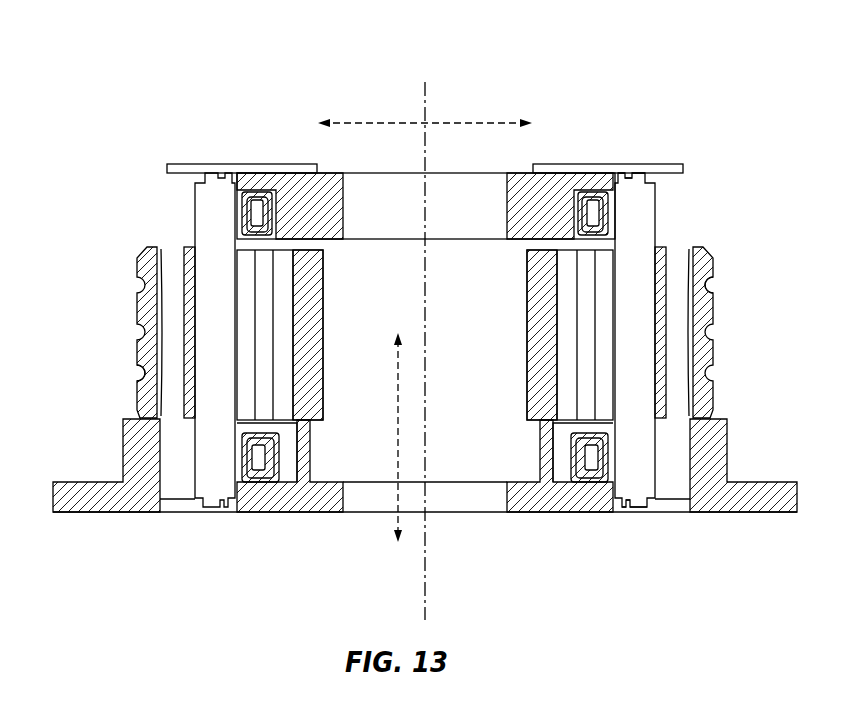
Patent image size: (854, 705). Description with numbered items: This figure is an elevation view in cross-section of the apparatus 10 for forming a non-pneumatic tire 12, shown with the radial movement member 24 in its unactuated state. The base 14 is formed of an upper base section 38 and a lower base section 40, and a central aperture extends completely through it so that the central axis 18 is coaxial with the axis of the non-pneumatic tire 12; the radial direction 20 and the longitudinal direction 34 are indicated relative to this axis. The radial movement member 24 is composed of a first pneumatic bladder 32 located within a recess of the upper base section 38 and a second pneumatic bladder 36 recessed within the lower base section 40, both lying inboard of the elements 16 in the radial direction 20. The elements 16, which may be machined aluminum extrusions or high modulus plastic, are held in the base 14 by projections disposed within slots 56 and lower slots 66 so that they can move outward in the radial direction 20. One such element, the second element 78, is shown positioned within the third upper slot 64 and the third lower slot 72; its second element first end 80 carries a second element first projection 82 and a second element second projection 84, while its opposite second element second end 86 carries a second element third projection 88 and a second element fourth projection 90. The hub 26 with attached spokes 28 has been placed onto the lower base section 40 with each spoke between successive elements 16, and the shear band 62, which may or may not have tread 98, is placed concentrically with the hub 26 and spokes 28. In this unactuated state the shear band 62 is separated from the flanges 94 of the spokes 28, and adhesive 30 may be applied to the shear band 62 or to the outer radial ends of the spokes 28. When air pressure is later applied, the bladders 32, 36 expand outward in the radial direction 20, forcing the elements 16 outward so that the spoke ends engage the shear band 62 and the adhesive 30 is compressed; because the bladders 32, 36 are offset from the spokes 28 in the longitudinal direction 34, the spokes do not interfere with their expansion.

The apparatus 10 is at (601, 57).
The non-pneumatic tire 12 is at (323, 397).
The base 14 is at (718, 462).
The elements 16 is at (229, 351).
The central axis 18 is at (427, 376).
The radial direction 20 is at (450, 122).
The radial movement member 24 is at (250, 453).
The hub 26 is at (323, 335).
The spokes 28 is at (565, 312).
The adhesive 30 is at (700, 250).
The first pneumatic bladder 32 is at (602, 212).
The longitudinal direction 34 is at (398, 500).
The second pneumatic bladder 36 is at (574, 485).
The upper base section 38 is at (507, 182).
The lower base section 40 is at (533, 483).
The slots 56 is at (185, 167).
The shear band 62 is at (712, 300).
The third upper slot 64 is at (683, 167).
The lower slots 66 is at (182, 507).
The third lower slot 72 is at (680, 510).
The second element 78 is at (638, 233).
The second element first end 80 is at (624, 148).
The second element first projection 82 is at (615, 170).
The second element second projection 84 is at (643, 170).
The second element second end 86 is at (634, 536).
The second element third projection 88 is at (625, 510).
The second element fourth projection 90 is at (637, 510).
The flanges 94 is at (184, 258).
The tread 98 is at (125, 371).